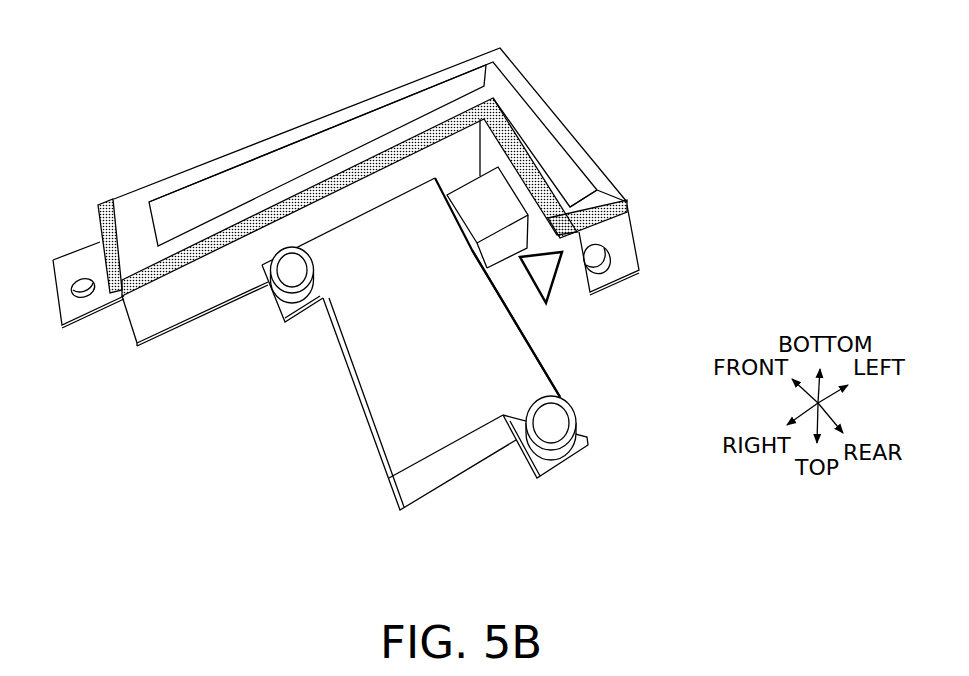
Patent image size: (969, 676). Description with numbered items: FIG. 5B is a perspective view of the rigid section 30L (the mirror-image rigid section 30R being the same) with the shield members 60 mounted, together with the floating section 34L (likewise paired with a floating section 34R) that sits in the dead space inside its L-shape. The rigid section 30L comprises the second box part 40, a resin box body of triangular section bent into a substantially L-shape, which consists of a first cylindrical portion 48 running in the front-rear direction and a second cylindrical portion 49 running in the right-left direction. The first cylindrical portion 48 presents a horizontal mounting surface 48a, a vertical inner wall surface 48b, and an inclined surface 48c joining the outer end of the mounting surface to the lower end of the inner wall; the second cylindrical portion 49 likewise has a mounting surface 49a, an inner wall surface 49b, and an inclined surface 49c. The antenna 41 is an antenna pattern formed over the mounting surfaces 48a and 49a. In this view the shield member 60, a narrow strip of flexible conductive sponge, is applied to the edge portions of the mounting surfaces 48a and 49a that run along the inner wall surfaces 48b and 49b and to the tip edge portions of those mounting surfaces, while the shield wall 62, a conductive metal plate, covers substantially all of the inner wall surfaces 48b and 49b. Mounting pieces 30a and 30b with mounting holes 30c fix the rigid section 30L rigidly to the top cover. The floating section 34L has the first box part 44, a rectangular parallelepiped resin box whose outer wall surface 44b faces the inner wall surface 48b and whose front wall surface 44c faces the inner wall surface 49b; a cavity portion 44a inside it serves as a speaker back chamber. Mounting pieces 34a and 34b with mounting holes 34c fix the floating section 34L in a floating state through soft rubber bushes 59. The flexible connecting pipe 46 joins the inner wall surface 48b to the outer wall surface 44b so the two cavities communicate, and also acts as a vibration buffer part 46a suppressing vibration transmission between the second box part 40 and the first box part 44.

The rigid section 30L is at (385, 236).
The rigid section 30R is at (117, 134).
The mounting piece 30a is at (620, 250).
The mounting piece 30b is at (72, 262).
The mounting hole 30c is at (82, 296).
The floating section 34L is at (454, 298).
The floating section 34R is at (274, 516).
The mounting piece 34a is at (537, 482).
The mounting piece 34b is at (288, 320).
The mounting hole 34c is at (298, 272).
The second box part 40 is at (397, 244).
The antenna 41 is at (350, 118).
The first box part 44 is at (352, 372).
The cavity portion 44a is at (385, 406).
The outer wall surface 44b is at (495, 252).
The front wall surface 44c is at (372, 206).
The connecting pipe 46 is at (549, 368).
The vibration buffer part 46a is at (656, 389).
The first cylindrical portion 48 is at (619, 201).
The mounting surface 48a is at (572, 148).
The inner wall surface 48b is at (570, 205).
The inclined surface 48c is at (562, 285).
The second cylindrical portion 49 is at (368, 245).
The mounting surface 49a is at (296, 155).
The inner wall surface 49b is at (147, 330).
The inclined surface 49c is at (194, 322).
The rubber bush 59 is at (268, 302).
The shield member 60 is at (101, 206).
The shield wall 62 is at (131, 430).